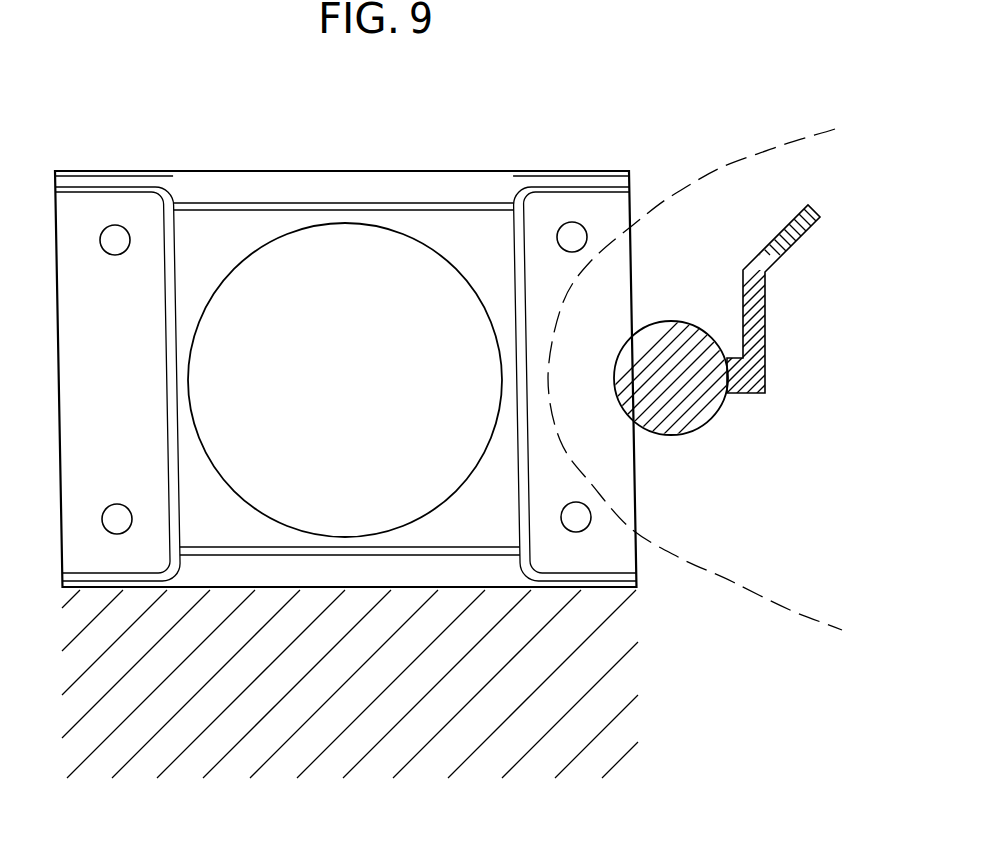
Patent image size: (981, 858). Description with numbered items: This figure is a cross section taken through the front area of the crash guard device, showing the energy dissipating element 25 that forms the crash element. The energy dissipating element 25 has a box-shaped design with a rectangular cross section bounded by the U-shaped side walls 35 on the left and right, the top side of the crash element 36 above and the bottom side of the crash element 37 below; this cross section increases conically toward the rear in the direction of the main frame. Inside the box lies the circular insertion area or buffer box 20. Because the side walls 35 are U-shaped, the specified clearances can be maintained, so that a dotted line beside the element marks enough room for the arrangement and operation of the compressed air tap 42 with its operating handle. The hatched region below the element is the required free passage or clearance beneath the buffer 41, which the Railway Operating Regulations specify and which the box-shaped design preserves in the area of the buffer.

The energy dissipating element 25 is at (79, 160).
The U-shaped side wall 35 is at (121, 184).
The insertion area or buffer box 20 is at (277, 258).
The top side of the crash element 36 is at (347, 205).
The bottom side of the crash element 37 is at (362, 556).
The clearance beneath the buffer 41 is at (608, 702).
The compressed air tap with operating handle 42 is at (775, 362).